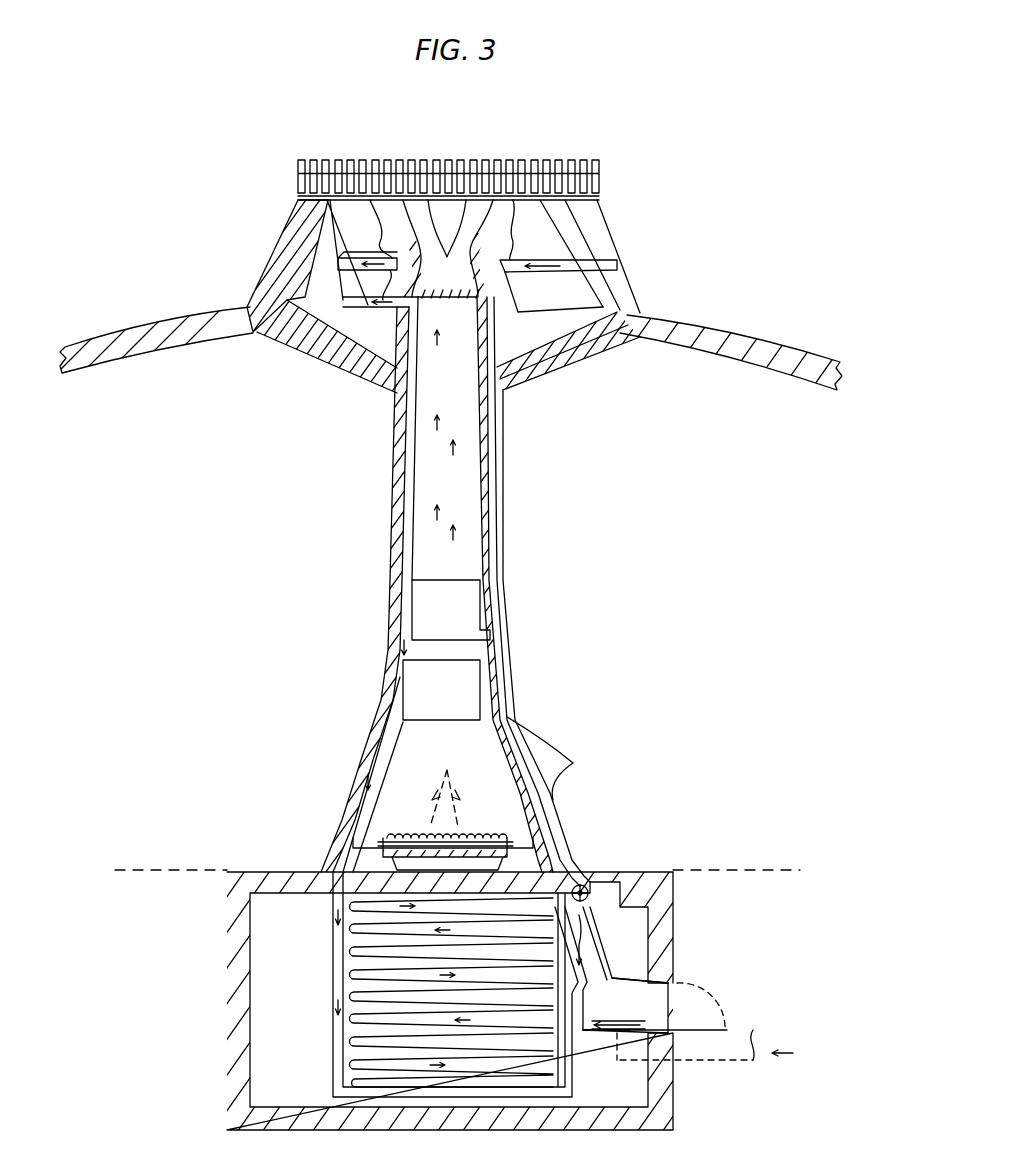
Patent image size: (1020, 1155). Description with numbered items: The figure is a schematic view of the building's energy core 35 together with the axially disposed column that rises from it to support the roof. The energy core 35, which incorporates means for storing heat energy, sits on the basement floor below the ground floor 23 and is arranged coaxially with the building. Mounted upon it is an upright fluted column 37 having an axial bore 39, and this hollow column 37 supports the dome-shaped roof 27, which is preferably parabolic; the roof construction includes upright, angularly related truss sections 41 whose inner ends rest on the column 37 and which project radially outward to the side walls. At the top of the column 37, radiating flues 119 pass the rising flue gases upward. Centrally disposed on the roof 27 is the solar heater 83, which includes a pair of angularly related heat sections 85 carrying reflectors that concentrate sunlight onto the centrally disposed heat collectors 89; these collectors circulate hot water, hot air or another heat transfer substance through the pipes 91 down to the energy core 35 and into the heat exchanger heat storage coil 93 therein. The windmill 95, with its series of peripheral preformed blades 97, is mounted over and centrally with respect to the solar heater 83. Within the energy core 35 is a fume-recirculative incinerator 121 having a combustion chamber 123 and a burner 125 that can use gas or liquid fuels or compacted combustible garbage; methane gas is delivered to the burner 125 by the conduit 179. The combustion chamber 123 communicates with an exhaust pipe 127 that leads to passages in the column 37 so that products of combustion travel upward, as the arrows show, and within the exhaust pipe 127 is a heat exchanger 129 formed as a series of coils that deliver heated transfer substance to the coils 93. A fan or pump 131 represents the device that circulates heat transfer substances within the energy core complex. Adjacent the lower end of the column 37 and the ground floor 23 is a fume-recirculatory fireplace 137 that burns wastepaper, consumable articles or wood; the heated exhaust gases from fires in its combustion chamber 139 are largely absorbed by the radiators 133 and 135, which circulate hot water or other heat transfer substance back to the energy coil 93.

The ground floor 23 is at (193, 868).
The dome-shaped roof 27 is at (724, 347).
The energy core 35 is at (232, 957).
The upright fluted column 37 is at (502, 425).
The axial bore 39 is at (458, 480).
The truss sections 41 is at (324, 364).
The solar heater 83 is at (625, 234).
The heat sections 85 is at (583, 213).
The heat collectors 89 is at (613, 263).
The pipes 91 is at (398, 457).
The heat exchanger heat storage coil 93 is at (357, 1020).
The windmill 95 is at (334, 155).
The peripheral preformed blades 97 is at (498, 160).
The radiating flues 119 is at (448, 310).
The fume-recirculative incinerator 121 is at (630, 1033).
The combustion chamber 123 is at (620, 1005).
The burner 125 is at (647, 1030).
The exhaust pipe 127 is at (593, 918).
The heat exchanger 129 is at (588, 952).
The fan or pump 131 is at (582, 884).
The radiator 133 is at (470, 610).
The radiator 135 is at (467, 694).
The fume-recirculatory fireplace 137 is at (393, 850).
The combustion chamber 139 is at (438, 776).
The conduit 179 is at (618, 1035).